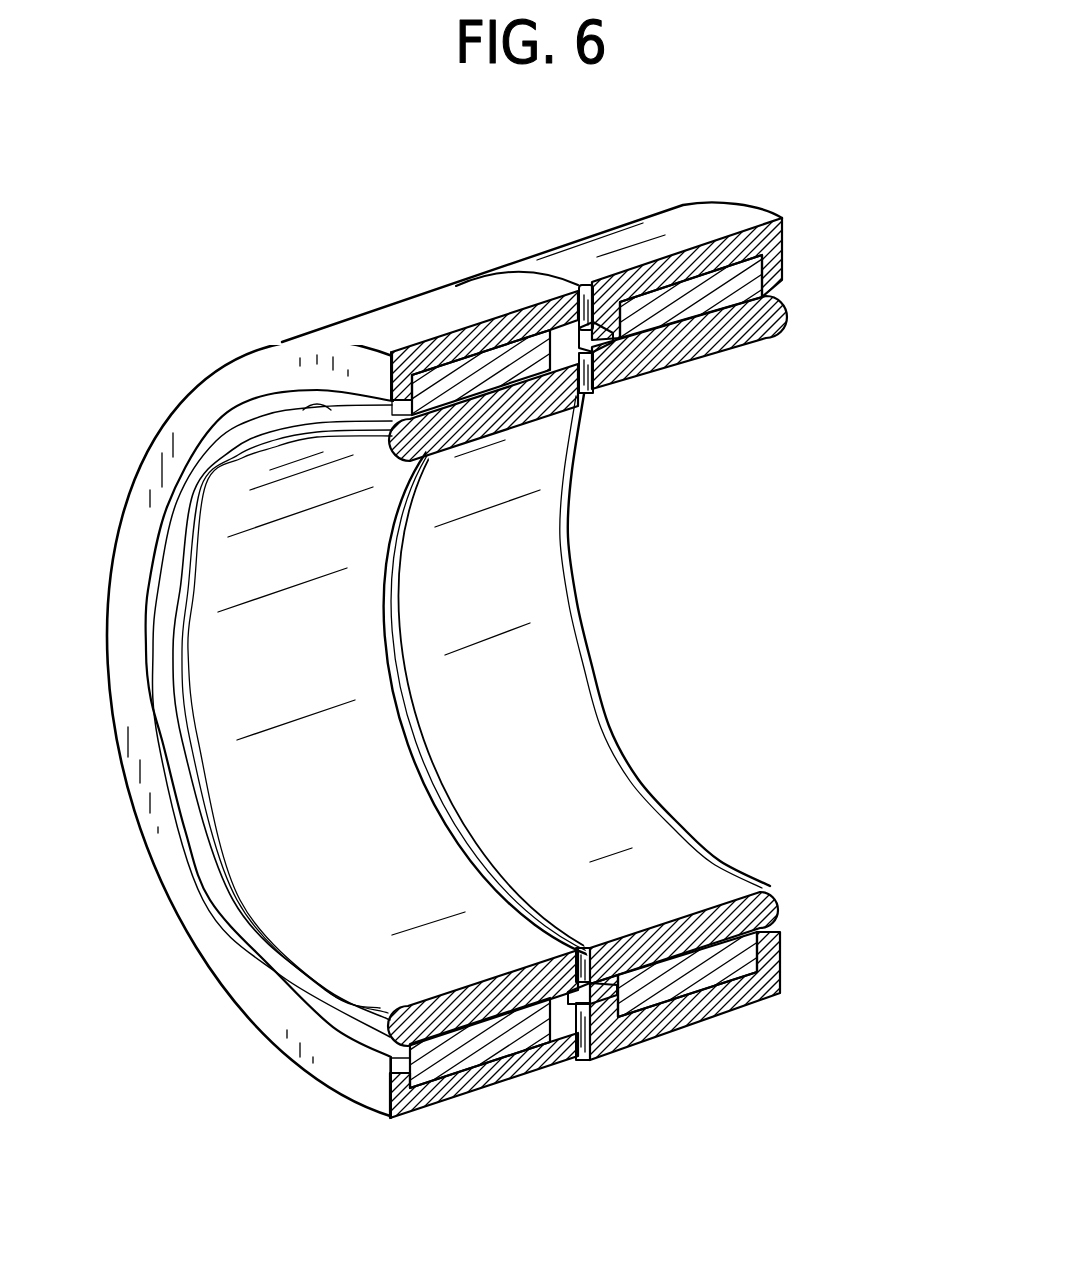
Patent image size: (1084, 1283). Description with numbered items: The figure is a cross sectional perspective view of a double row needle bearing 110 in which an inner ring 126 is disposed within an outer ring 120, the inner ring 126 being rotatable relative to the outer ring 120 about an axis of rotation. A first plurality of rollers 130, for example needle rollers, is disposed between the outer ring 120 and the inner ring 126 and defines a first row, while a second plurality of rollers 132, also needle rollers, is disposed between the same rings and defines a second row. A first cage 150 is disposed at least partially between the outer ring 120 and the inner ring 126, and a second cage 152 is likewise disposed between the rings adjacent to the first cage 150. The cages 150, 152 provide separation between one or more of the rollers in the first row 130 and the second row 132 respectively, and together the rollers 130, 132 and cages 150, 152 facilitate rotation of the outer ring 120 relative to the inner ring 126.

The bearing 110 is at (710, 650).
The outer ring 120 is at (257, 363).
The inner ring 126 is at (727, 337).
The first plurality of rollers 130 is at (480, 368).
The second plurality of rollers 132 is at (698, 292).
The first cage 150 is at (390, 1063).
The second cage 152 is at (773, 935).